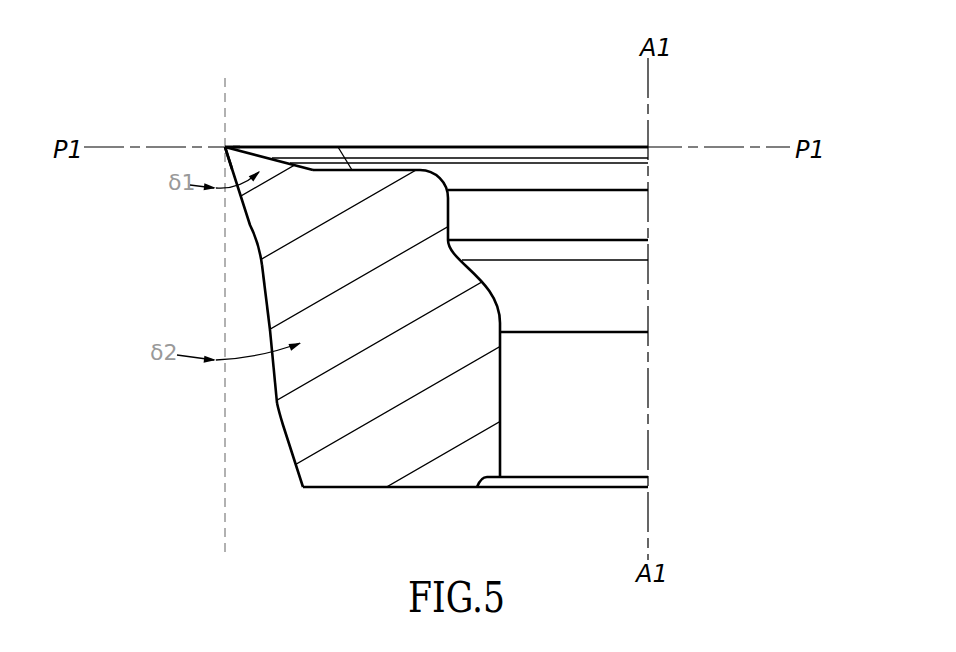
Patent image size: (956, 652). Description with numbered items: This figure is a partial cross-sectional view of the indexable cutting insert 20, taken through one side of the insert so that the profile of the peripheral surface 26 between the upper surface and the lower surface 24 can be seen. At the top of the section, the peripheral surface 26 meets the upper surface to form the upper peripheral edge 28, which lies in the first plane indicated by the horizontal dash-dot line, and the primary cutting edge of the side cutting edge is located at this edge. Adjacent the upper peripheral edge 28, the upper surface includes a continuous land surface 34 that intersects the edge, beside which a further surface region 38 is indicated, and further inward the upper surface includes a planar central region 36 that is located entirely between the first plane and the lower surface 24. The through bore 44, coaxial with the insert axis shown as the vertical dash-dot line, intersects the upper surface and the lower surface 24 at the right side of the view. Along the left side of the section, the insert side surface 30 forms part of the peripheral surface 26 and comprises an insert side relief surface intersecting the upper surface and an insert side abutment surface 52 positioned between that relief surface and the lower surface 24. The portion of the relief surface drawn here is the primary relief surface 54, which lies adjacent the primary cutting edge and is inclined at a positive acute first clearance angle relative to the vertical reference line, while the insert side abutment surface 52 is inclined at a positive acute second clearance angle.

The indexable cutting insert 20 is at (524, 134).
The lower surface 24 is at (412, 492).
The peripheral surface 26 is at (284, 443).
The upper peripheral edge 28 is at (224, 147).
The insert side surface 30 is at (270, 381).
The land surface 34 is at (233, 148).
The planar central region 36 is at (384, 170).
The land 38 is at (289, 145).
The through bore 44 is at (574, 427).
The insert side abutment surface 52 is at (267, 313).
The primary relief surface 54 is at (240, 193).